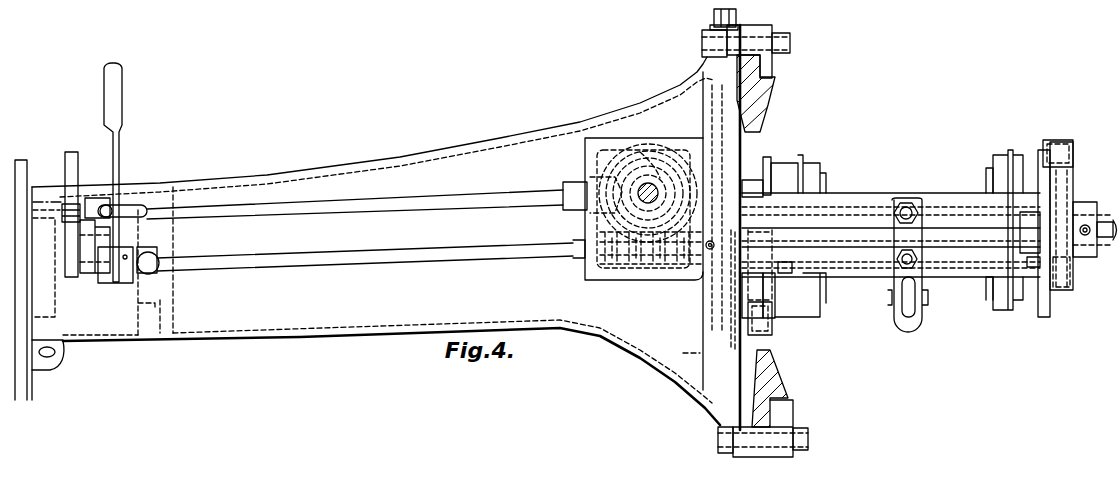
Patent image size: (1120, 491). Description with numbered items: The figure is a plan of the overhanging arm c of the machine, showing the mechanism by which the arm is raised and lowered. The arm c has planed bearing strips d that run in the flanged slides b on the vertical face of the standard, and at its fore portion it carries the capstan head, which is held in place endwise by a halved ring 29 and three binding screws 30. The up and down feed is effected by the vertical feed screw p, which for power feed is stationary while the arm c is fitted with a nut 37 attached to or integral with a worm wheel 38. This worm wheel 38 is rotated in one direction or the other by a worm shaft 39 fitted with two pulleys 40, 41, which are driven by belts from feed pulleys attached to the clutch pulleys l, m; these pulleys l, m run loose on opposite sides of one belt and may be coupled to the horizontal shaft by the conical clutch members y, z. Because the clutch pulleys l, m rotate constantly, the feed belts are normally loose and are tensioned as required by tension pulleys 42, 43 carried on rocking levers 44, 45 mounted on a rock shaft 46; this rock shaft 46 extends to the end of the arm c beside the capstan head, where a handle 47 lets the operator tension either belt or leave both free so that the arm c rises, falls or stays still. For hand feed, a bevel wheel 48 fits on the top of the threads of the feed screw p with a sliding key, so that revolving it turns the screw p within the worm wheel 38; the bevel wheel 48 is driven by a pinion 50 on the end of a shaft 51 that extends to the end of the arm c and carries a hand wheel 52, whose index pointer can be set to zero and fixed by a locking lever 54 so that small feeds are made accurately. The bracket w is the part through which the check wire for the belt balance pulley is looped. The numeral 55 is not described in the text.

The halved ring 29 is at (148, 228).
The binding screws 30 is at (160, 250).
The nut 37 is at (644, 209).
The worm wheel 38 is at (676, 214).
The worm shaft 39 is at (640, 266).
The pulley 40 is at (756, 200).
The pulley 41 is at (1070, 210).
The tension pulley 42 is at (758, 334).
The tension pulley 43 is at (1056, 143).
The rocking lever 44 is at (716, 310).
The rocking lever 45 is at (1046, 190).
The rock shaft 46 is at (258, 266).
The handle 47 is at (118, 101).
The bevel wheel 48 is at (640, 150).
The pinion 50 is at (605, 190).
The shaft 51 is at (266, 208).
The hand wheel 52 is at (70, 163).
The locking lever 54 is at (138, 210).
The bracket 55 is at (85, 230).
The overhanging arm c is at (27, 262).
The vertical feed screw p is at (651, 188).
The flanged slides b is at (768, 88).
The bearing strips d is at (771, 70).
The pulley l is at (788, 165).
The conical clutch member y is at (824, 187).
The conical clutch member z is at (987, 178).
The pulley m is at (1027, 160).
The bracket w is at (926, 291).